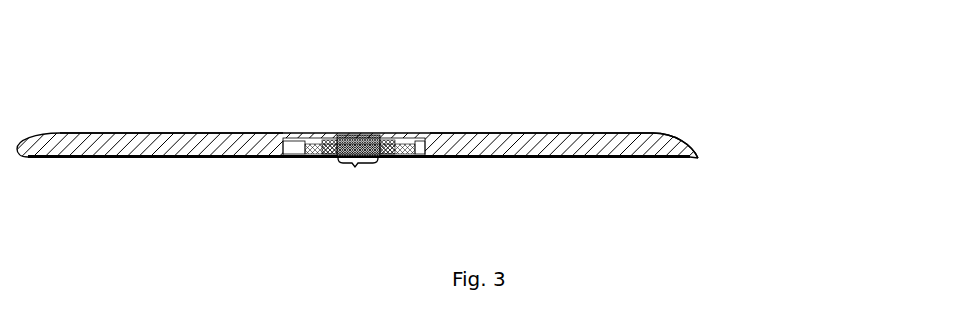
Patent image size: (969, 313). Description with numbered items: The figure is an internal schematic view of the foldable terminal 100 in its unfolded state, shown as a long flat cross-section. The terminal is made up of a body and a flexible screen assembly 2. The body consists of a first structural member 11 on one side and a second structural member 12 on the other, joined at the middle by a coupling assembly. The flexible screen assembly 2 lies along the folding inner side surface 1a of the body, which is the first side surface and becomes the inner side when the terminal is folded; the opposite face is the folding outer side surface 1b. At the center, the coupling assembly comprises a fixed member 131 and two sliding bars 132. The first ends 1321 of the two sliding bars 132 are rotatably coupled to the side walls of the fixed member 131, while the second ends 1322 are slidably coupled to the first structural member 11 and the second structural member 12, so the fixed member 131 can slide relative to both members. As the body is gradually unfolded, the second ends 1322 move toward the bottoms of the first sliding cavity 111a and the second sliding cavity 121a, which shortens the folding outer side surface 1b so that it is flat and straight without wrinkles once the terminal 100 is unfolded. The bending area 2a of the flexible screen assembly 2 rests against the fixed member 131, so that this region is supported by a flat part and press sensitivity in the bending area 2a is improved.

The foldable terminal 100 is at (721, 71).
The folding inner side surface 1a is at (692, 170).
The folding outer side surface 1b is at (614, 130).
The first structural member 11 is at (530, 137).
The second structural member 12 is at (155, 142).
The flexible screen assembly 2 is at (251, 170).
The bending area 2a is at (358, 170).
The second sliding cavity 121a is at (321, 158).
The first sliding cavity 111a is at (398, 158).
The fixed member 131 is at (358, 136).
The sliding bars 132 is at (344, 93).
The first ends 1321 is at (339, 139).
The second ends 1322 is at (307, 140).